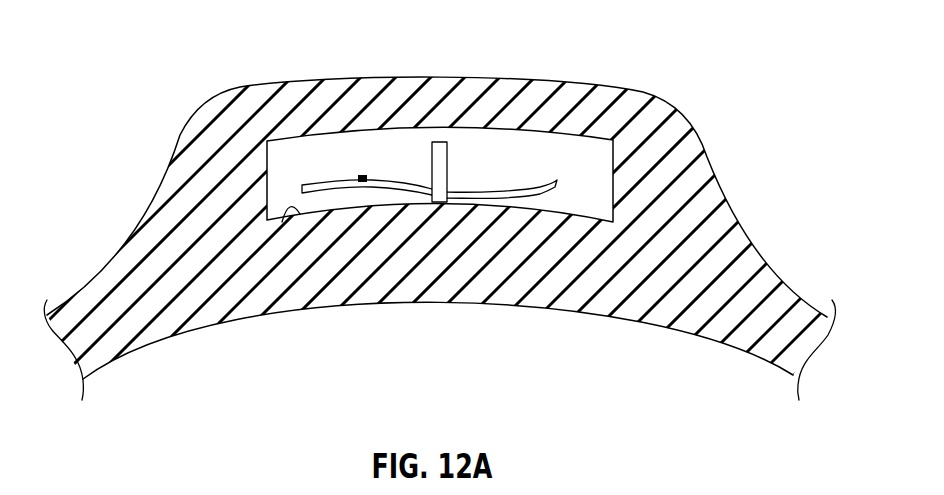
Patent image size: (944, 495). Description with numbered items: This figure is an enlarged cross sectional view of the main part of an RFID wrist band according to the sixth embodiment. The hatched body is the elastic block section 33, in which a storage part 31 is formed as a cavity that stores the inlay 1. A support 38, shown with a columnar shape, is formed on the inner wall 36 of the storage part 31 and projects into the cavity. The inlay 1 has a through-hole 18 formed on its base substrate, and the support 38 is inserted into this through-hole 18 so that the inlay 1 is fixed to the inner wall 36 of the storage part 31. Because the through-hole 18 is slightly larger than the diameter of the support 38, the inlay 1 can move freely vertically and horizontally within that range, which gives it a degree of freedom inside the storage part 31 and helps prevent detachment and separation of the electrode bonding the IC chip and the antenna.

The inlay 1 is at (517, 177).
The through-hole 18 is at (447, 188).
The storage part 31 is at (357, 153).
The elastic block section 33 is at (432, 88).
The inner wall 36 is at (300, 214).
The support 38 is at (442, 202).